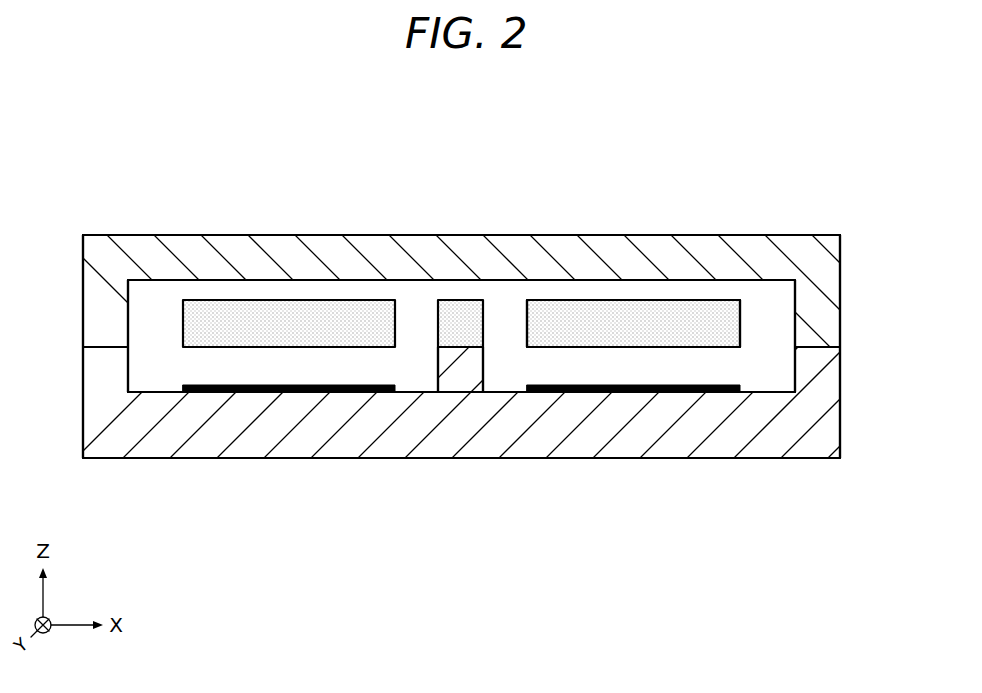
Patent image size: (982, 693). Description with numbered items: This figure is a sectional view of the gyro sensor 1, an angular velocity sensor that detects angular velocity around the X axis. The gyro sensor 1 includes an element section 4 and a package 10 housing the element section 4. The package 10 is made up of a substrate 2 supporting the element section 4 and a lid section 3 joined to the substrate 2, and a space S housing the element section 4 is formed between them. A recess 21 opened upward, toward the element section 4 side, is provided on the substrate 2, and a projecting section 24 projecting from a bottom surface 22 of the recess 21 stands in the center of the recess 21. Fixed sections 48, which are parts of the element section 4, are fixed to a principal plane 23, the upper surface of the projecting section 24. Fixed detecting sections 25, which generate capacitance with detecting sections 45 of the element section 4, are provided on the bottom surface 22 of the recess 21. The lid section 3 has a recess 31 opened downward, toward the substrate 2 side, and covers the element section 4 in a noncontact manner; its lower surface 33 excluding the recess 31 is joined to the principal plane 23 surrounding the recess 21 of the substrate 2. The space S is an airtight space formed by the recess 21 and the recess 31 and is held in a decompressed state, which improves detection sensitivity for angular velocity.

The gyro sensor 1 is at (862, 160).
The substrate 2 is at (840, 408).
The lid section 3 is at (840, 277).
The element section 4 is at (712, 288).
The package 10 is at (530, 226).
The recess 21 is at (766, 392).
The bottom surface 22 is at (505, 382).
The principal plane 23 is at (104, 345).
The projecting section 24 is at (446, 357).
The fixed detecting sections 25 is at (375, 383).
The recess 31 is at (765, 276).
The lower surface 33 is at (817, 352).
The detecting sections 45 is at (275, 300).
The fixed sections 48 is at (466, 300).
The space S is at (148, 287).